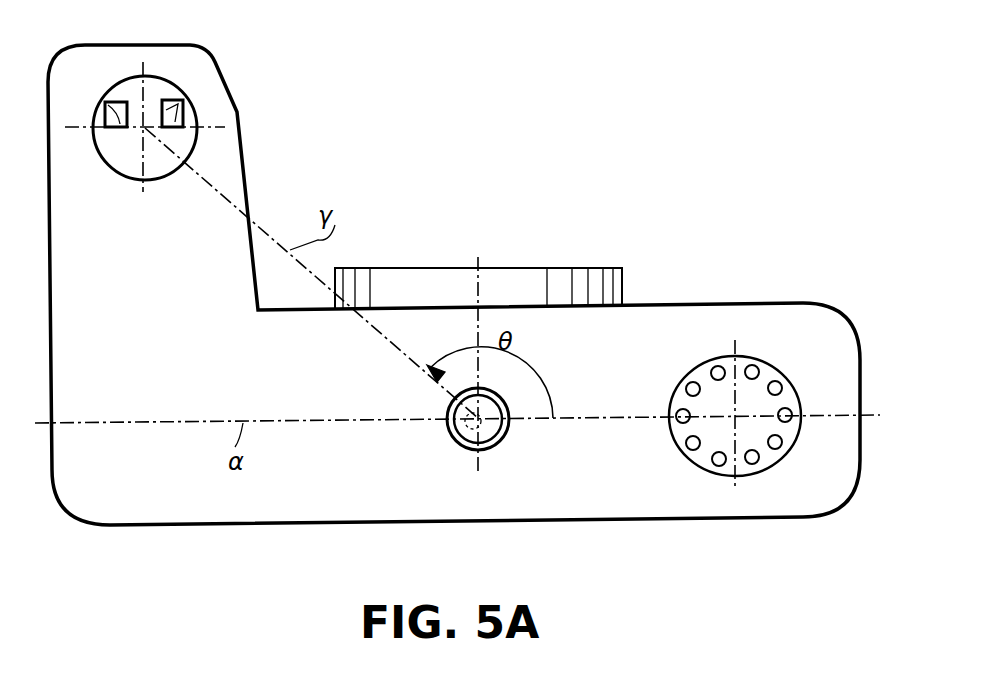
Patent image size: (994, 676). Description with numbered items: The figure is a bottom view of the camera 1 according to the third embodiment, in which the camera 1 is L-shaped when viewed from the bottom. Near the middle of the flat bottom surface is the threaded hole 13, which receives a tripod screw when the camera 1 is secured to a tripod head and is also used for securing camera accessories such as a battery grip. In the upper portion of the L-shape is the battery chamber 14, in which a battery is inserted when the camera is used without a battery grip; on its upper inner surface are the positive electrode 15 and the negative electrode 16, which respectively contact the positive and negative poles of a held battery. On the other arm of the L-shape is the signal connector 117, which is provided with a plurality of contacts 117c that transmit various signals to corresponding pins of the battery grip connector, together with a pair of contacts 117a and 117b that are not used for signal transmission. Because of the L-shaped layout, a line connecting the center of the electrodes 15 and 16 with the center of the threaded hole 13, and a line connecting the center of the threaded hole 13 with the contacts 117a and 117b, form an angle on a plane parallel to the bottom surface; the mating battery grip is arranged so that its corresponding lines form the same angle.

The camera 1 is at (645, 195).
The threaded hole 13 is at (460, 440).
The battery chamber 14 is at (108, 153).
The positive electrode 15 is at (105, 104).
The negative electrode 16 is at (183, 101).
The signal connector 117 is at (677, 392).
The contact 117a is at (830, 393).
The contact 117b is at (680, 420).
The contacts 117c is at (692, 382).